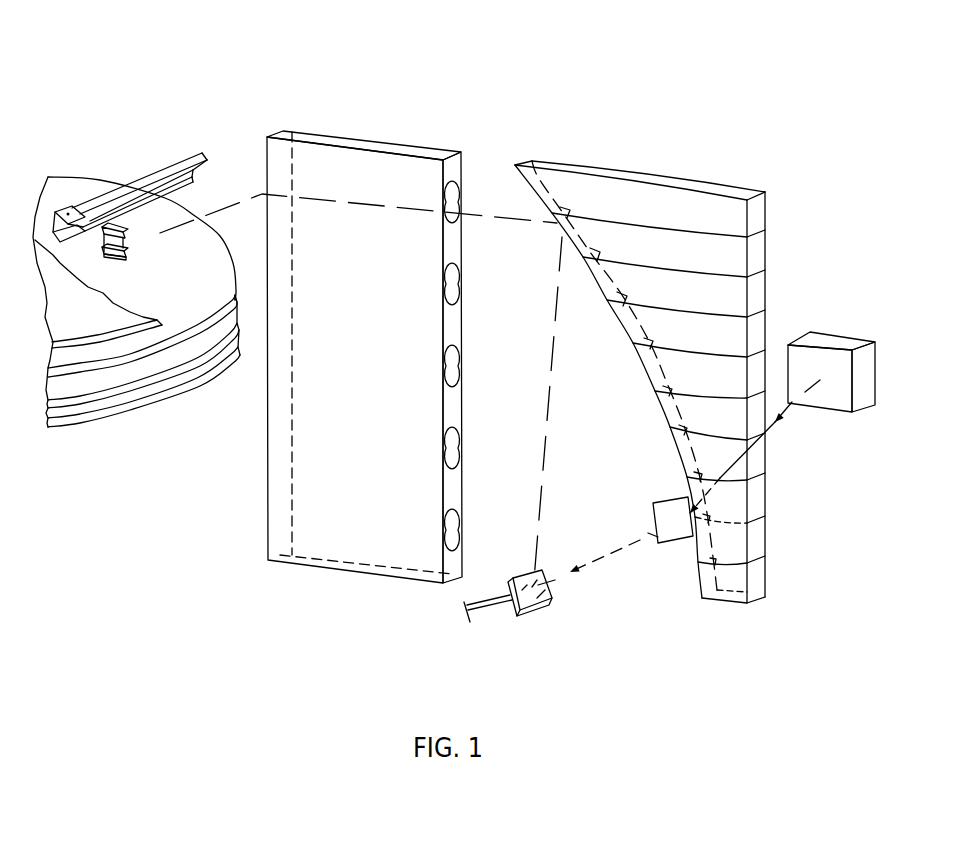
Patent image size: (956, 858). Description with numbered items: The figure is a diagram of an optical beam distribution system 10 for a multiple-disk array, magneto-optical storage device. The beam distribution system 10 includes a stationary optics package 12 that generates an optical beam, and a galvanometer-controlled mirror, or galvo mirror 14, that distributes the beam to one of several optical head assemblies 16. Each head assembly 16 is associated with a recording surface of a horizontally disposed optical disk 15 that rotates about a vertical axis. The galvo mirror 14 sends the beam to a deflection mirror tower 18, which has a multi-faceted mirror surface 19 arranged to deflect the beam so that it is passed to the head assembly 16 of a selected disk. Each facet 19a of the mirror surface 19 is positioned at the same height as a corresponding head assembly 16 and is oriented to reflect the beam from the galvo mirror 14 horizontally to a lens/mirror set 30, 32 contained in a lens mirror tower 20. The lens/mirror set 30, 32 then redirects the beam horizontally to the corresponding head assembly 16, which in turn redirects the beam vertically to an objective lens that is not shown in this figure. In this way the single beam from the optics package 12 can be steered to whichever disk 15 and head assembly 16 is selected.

The optical beam distribution system 10 is at (197, 83).
The stationary optics package 12 is at (840, 413).
The galvo mirror 14 is at (537, 615).
The optical disk 15 is at (95, 177).
The optical head assembly 16 is at (124, 234).
The deflection mirror tower 18 is at (777, 260).
The multi-faceted mirror surface 19 is at (643, 387).
The facet 19a is at (625, 330).
The lens mirror tower 20 is at (263, 206).
The lens/mirror set 30 is at (455, 376).
The lens/mirror set 32 is at (277, 324).